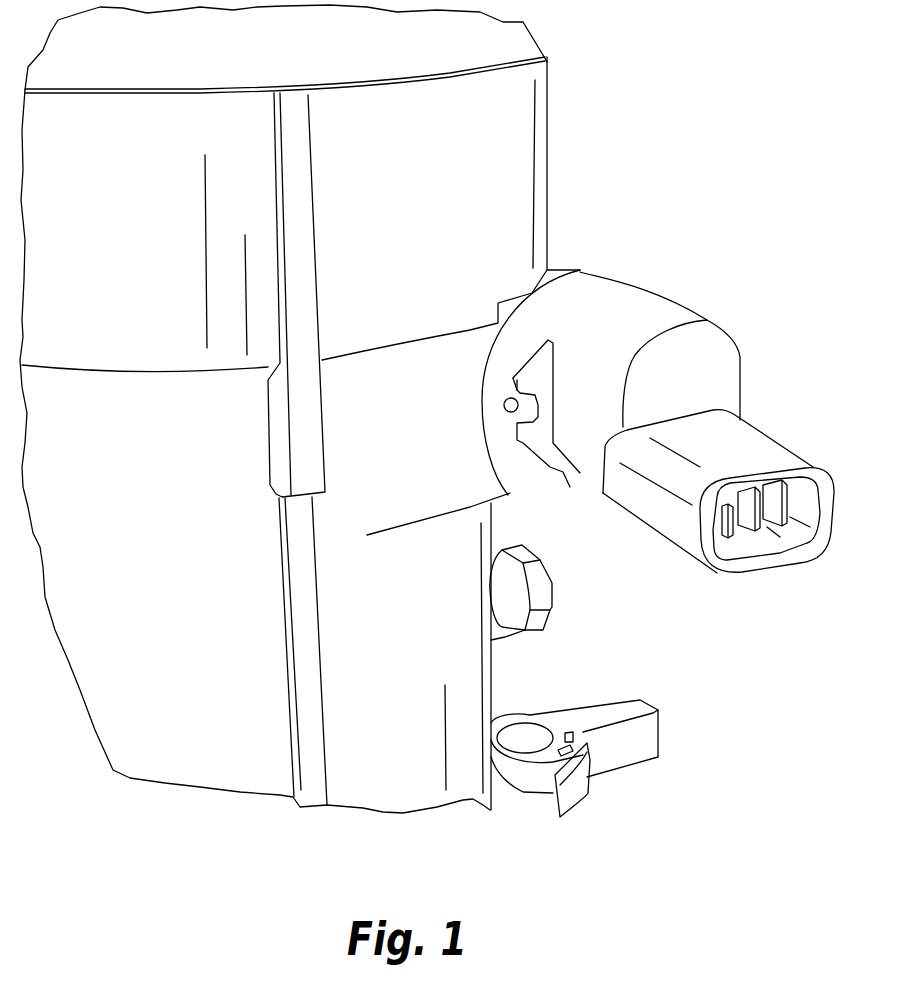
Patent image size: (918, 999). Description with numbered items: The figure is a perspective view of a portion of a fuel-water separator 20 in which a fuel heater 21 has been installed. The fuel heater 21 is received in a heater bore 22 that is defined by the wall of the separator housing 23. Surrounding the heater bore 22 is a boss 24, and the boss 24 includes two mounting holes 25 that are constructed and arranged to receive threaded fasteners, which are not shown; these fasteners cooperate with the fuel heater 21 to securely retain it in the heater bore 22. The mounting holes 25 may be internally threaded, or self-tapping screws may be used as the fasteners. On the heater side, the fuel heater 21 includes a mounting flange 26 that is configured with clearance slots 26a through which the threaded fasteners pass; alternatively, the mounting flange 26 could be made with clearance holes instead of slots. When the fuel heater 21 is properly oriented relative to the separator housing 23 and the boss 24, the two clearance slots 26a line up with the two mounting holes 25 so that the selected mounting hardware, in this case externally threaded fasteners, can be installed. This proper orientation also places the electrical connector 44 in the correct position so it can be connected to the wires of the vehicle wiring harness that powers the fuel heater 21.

The fuel-water separator 20 is at (579, 600).
The fuel heater 21 is at (653, 505).
The heater bore 22 is at (593, 280).
The separator housing 23 is at (468, 690).
The boss 24 is at (560, 277).
The mounting holes 25 is at (505, 412).
The mounting flange 26 is at (572, 447).
The clearance slots 26a is at (504, 399).
The electrical connector 44 is at (772, 545).